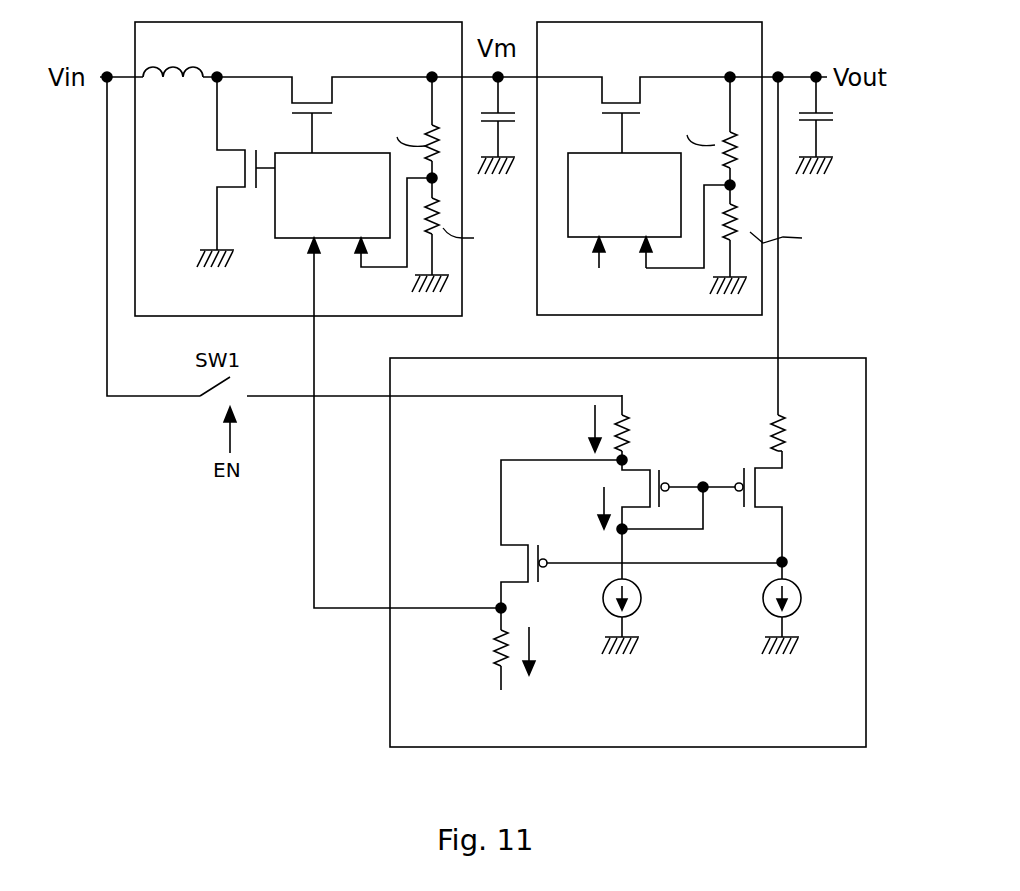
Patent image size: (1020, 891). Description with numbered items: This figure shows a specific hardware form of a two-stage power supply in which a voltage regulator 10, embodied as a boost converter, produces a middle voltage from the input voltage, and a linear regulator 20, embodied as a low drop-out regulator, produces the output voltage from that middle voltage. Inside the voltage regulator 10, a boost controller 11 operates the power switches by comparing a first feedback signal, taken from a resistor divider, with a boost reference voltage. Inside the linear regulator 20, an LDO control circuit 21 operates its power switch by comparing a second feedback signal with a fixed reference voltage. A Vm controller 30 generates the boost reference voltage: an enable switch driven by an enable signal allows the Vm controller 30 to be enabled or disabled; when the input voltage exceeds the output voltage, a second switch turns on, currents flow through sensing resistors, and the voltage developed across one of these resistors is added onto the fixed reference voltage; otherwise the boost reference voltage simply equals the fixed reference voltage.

The voltage regulator 10 is at (446, 52).
The boost controller 11 is at (323, 230).
The linear regulator 20 is at (751, 52).
The LDO control circuit 21 is at (614, 229).
The Vm controller 30 is at (840, 733).